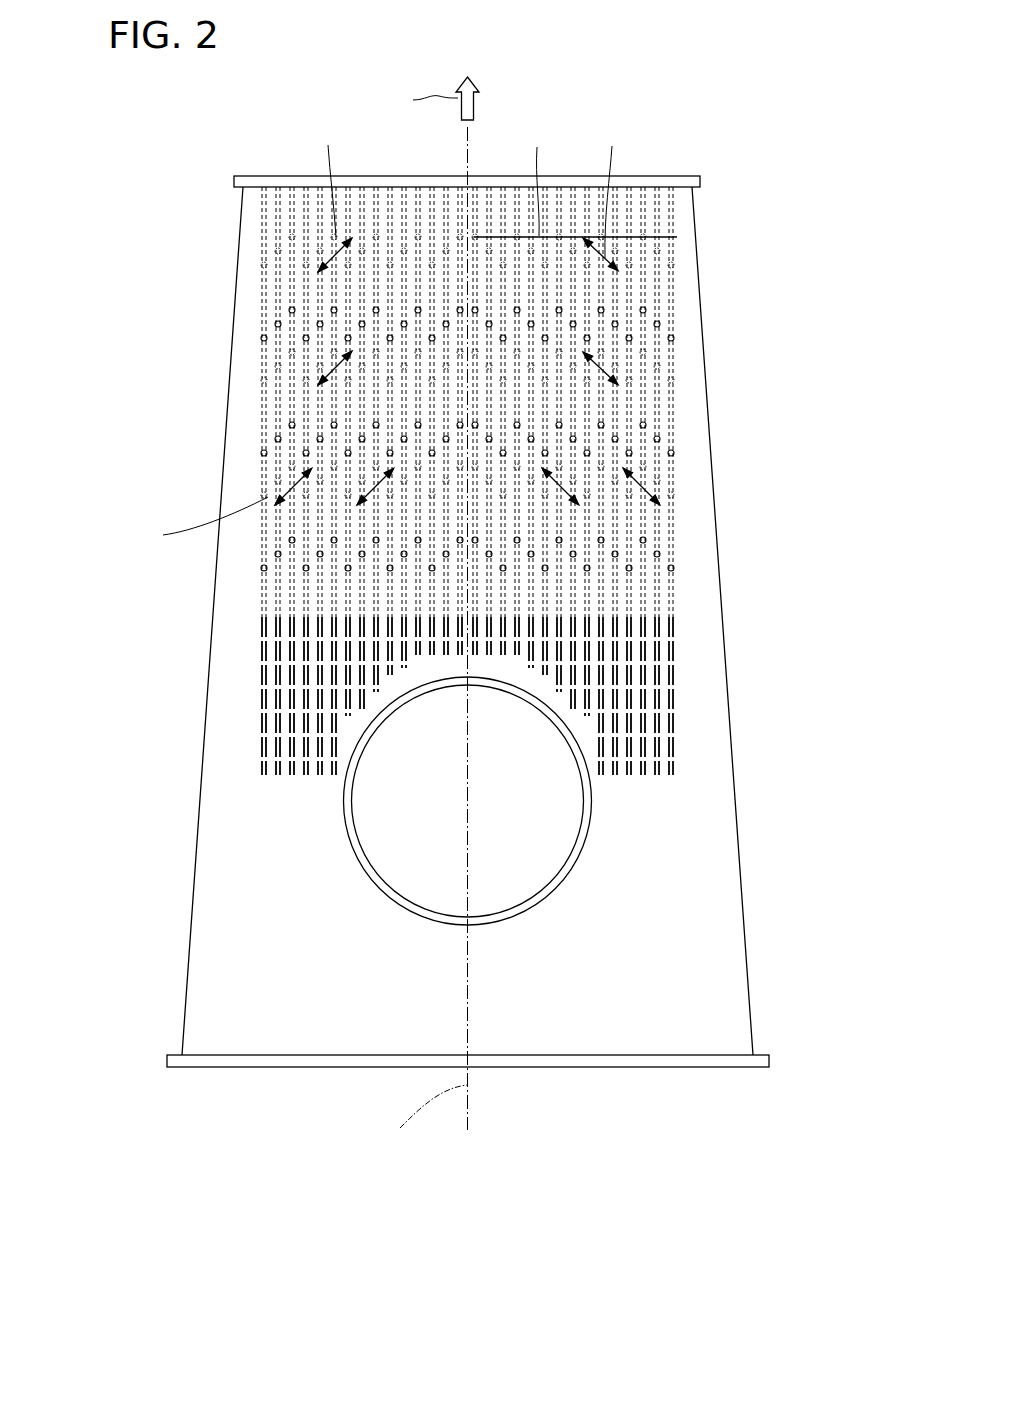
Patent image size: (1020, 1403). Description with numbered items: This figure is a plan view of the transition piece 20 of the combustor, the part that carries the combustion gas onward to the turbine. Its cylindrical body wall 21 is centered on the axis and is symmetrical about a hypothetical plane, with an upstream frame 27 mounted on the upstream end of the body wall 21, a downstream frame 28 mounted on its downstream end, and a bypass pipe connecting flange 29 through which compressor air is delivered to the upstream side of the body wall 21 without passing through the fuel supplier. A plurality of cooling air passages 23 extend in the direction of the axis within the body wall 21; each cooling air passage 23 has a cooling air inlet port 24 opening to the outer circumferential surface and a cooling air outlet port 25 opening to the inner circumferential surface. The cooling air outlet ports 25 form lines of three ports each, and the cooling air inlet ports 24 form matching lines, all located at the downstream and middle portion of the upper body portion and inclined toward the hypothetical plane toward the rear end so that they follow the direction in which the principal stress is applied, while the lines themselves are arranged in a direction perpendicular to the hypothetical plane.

The transition piece 20 is at (469, 619).
The body wall 21 is at (740, 880).
The cooling air passage 23 is at (266, 600).
The cooling air inlet port 24 is at (261, 453).
The cooling air outlet port 25 is at (266, 378).
The upstream frame 27 is at (223, 1067).
The downstream frame 28 is at (256, 176).
The bypass pipe connecting flange 29 is at (344, 822).